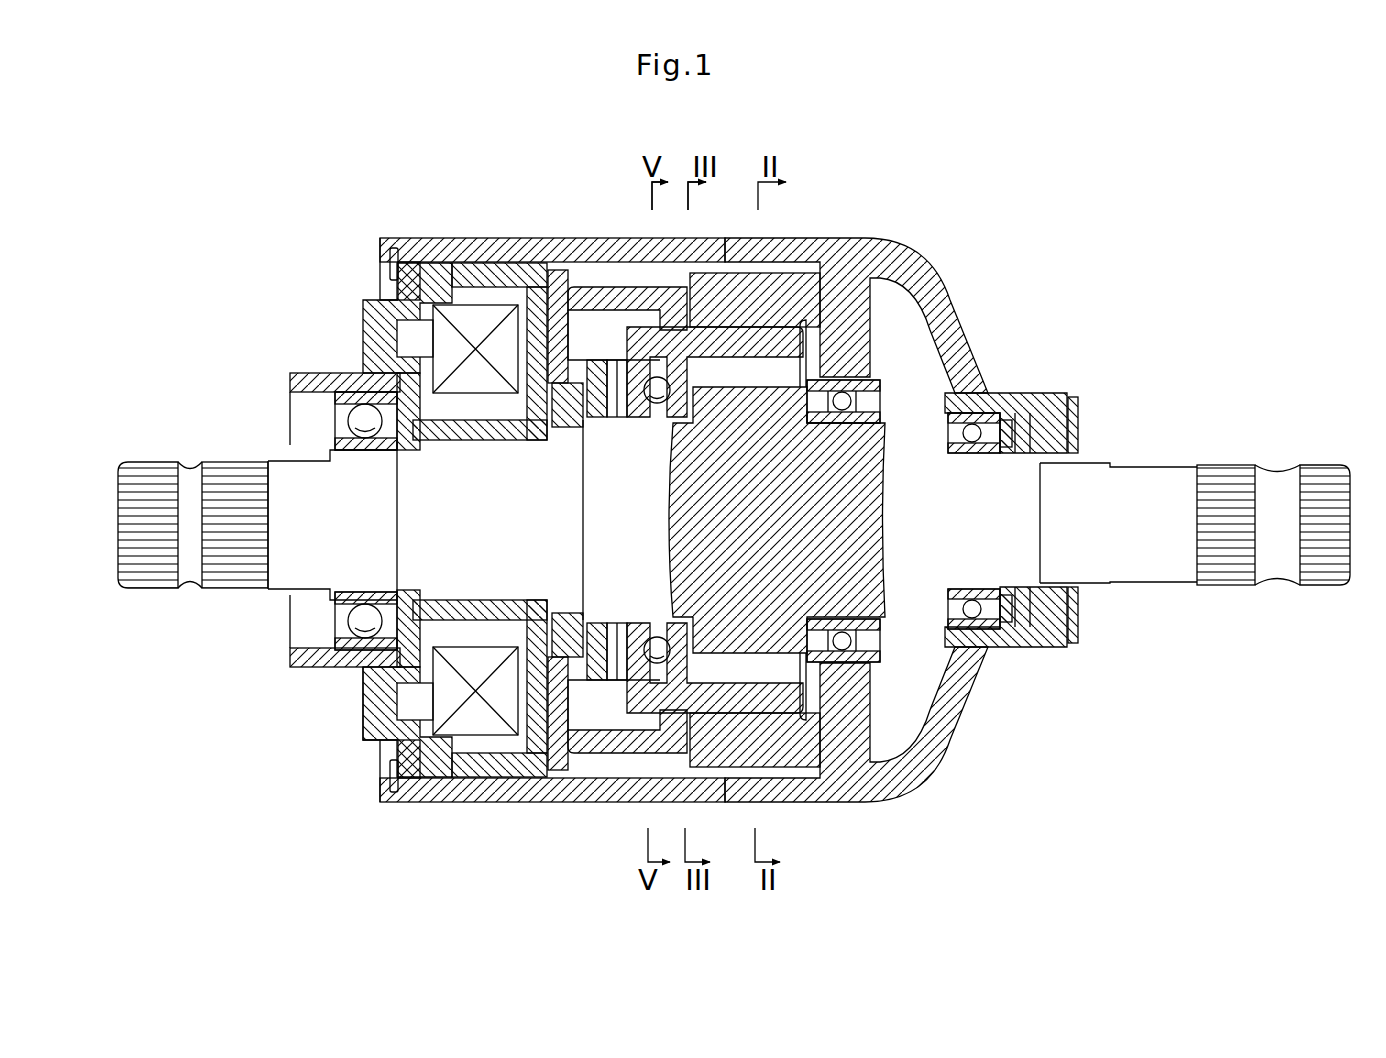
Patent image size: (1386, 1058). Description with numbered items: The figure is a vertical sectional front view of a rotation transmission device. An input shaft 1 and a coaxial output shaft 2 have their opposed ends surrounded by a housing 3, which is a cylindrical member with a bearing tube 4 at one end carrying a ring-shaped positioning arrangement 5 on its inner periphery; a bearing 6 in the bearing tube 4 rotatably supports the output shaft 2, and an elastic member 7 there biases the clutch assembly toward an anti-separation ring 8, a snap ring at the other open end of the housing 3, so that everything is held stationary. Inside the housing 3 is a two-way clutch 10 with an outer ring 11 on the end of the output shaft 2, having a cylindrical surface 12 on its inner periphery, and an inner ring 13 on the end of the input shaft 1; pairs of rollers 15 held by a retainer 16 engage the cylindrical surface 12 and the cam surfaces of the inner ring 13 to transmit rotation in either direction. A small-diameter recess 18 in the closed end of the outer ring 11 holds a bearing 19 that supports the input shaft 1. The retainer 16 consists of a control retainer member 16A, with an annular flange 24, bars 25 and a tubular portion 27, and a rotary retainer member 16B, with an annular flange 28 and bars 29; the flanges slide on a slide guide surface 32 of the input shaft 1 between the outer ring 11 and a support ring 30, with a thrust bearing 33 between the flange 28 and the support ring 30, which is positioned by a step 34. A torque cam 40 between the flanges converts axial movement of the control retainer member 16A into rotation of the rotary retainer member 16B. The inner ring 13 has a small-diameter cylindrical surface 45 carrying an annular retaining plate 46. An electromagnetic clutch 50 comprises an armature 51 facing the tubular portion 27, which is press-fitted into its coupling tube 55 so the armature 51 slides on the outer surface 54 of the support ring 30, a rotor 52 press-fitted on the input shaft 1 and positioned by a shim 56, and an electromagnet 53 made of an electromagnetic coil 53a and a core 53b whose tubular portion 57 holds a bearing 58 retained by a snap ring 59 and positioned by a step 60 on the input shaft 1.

The input shaft 1 is at (290, 470).
The output shaft 2 is at (1090, 485).
The housing 3 is at (497, 238).
The bearing tube 4 is at (1000, 405).
The positioning arrangement 5 is at (1072, 398).
The bearing 6 is at (985, 630).
The elastic member 7 is at (1030, 640).
The anti-separation ring 8 is at (390, 262).
The two-way clutch 10 is at (815, 262).
The outer ring 11 is at (835, 290).
The cylindrical surface 12 is at (835, 287).
The inner ring 13 is at (817, 373).
The rollers 15 is at (785, 600).
The retainer 16 is at (650, 280).
The control retainer member 16A is at (681, 272).
The rotary retainer member 16B is at (610, 322).
The small-diameter recess 18 is at (930, 735).
The bearing 19 is at (948, 715).
The annular flange 24 is at (638, 803).
The bars 25 is at (777, 667).
The tubular portion 27 is at (593, 803).
The annular flange 28 is at (605, 335).
The bars 29 is at (750, 330).
The support ring 30 is at (570, 440).
The slide guide surface 32 is at (640, 623).
The thrust bearing 33 is at (605, 440).
The step 34 is at (585, 522).
The torque cam 40 is at (633, 418).
The small-diameter cylindrical surface 45 is at (678, 440).
The annular retaining plate 46 is at (673, 470).
The electromagnetic clutch 50 is at (450, 803).
The armature 51 is at (540, 803).
The rotor 52 is at (487, 803).
The electromagnet 53 is at (418, 803).
The electromagnetic coil 53a is at (440, 693).
The core 53b is at (412, 762).
The cylindrical radially outer surface 54 is at (575, 670).
The coupling tube 55 is at (565, 803).
The shim 56 is at (545, 600).
The tubular portion 57 is at (328, 640).
The bearing 58 is at (335, 610).
The snap ring 59 is at (305, 372).
The step 60 is at (397, 525).